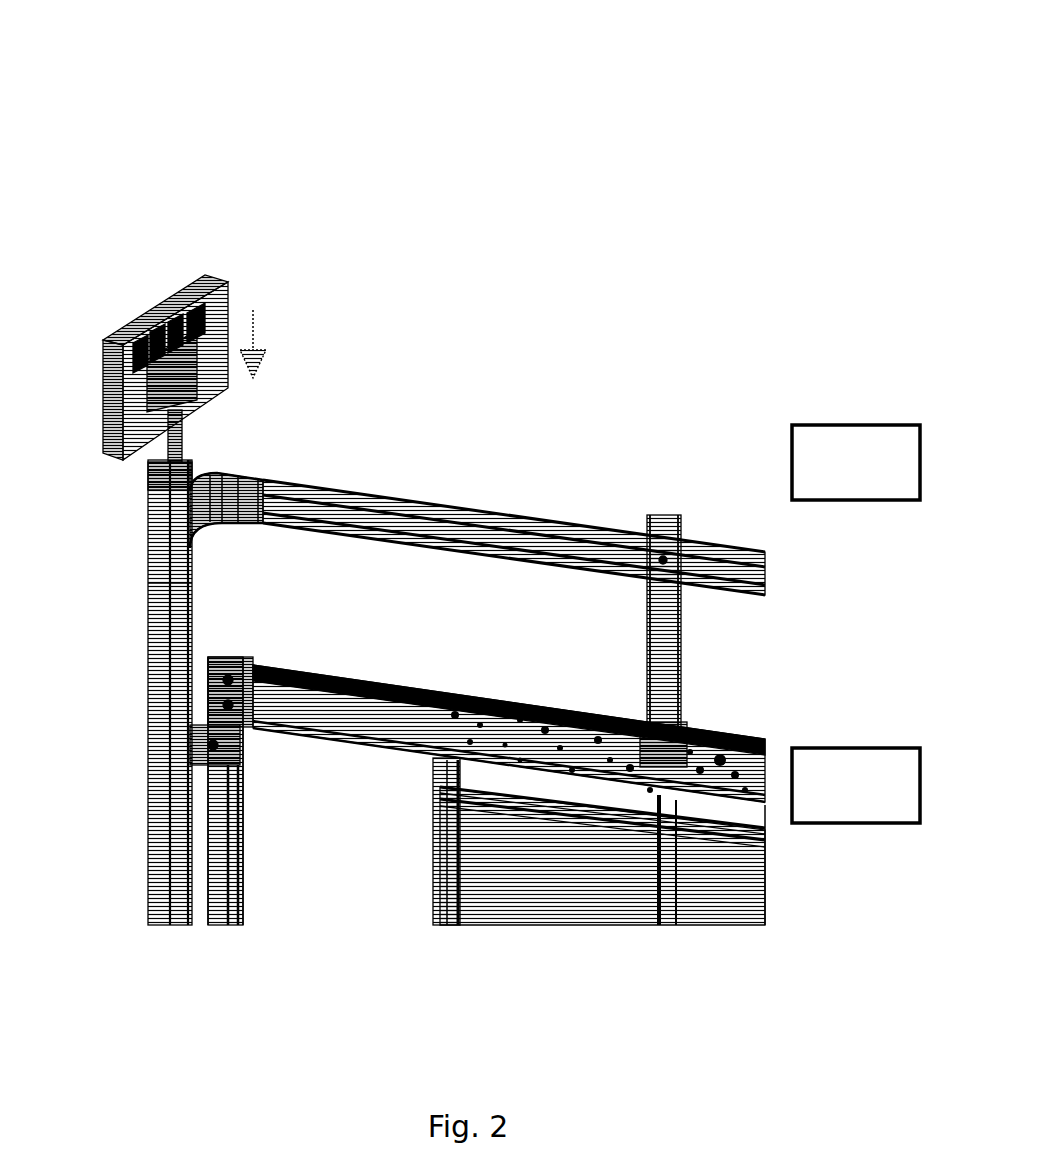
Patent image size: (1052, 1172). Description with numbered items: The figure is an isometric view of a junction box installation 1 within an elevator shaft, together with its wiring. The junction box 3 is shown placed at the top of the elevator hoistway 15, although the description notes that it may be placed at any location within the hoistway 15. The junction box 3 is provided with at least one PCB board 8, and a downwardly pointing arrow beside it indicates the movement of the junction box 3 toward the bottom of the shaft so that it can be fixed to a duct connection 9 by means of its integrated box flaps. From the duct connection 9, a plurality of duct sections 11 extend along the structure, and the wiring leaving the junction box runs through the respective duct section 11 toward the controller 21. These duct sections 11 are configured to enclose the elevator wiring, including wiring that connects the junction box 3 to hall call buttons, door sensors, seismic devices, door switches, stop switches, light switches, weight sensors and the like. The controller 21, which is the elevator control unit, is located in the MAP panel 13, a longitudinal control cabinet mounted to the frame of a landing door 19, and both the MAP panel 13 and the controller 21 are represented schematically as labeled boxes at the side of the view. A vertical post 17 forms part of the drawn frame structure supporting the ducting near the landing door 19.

The flight simulator cockpit frame assembly 1 is at (375, 212).
The junction box 3 is at (172, 287).
The PCB board 8 is at (207, 316).
The duct connection 9 is at (255, 480).
The duct sections 11 is at (345, 478).
The MAP panel 13 is at (832, 425).
The elevator hoistway 15 is at (433, 581).
The vertical post 17 is at (205, 704).
The landing door 19 is at (430, 815).
The controller 21 is at (832, 748).